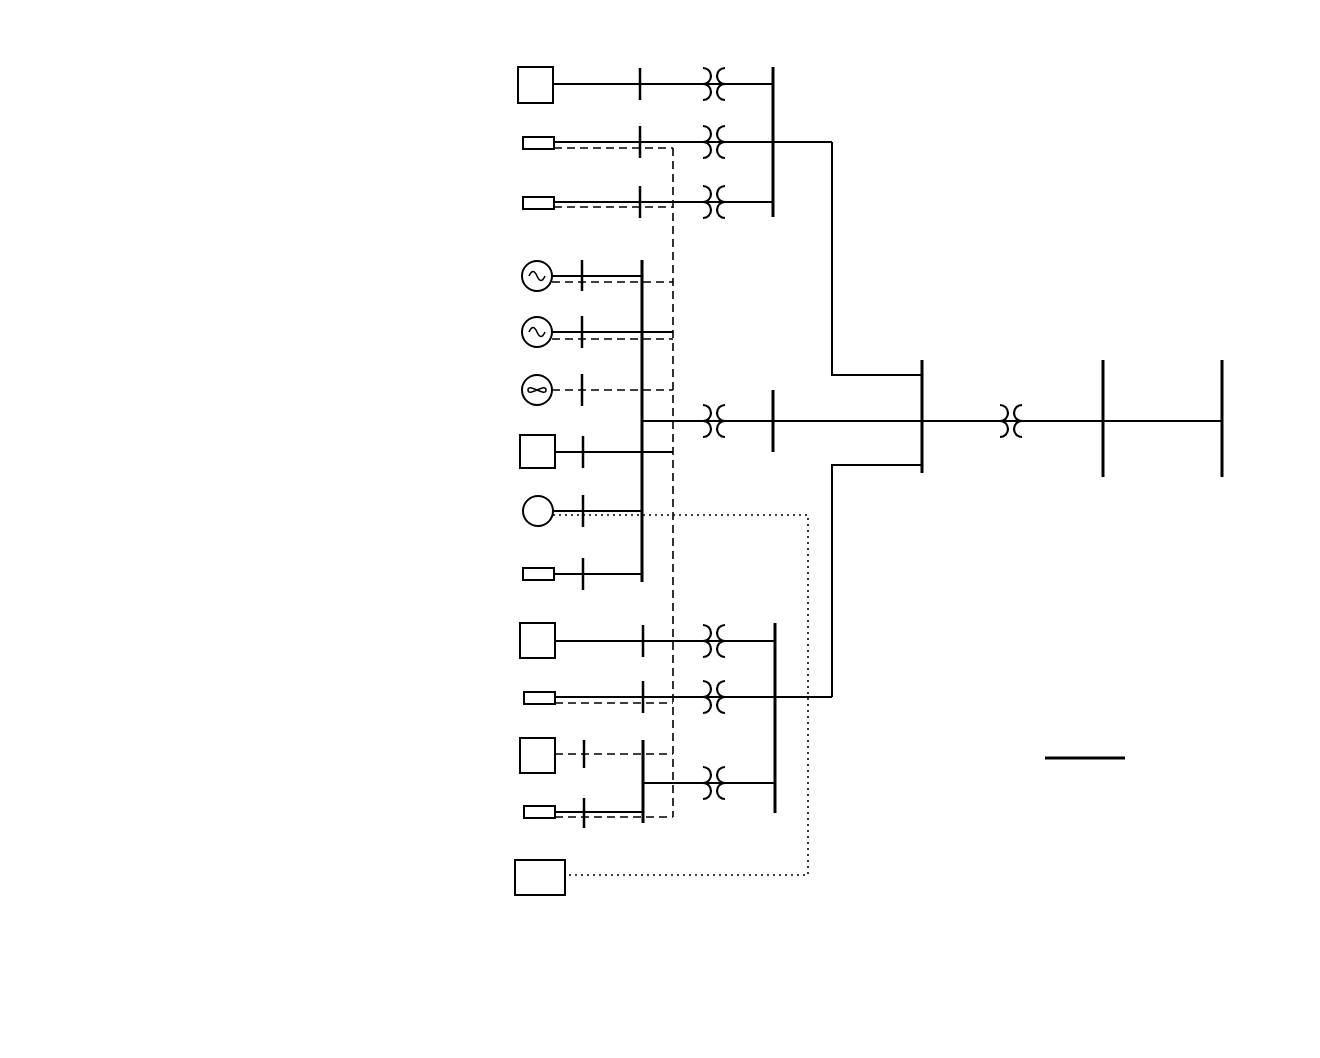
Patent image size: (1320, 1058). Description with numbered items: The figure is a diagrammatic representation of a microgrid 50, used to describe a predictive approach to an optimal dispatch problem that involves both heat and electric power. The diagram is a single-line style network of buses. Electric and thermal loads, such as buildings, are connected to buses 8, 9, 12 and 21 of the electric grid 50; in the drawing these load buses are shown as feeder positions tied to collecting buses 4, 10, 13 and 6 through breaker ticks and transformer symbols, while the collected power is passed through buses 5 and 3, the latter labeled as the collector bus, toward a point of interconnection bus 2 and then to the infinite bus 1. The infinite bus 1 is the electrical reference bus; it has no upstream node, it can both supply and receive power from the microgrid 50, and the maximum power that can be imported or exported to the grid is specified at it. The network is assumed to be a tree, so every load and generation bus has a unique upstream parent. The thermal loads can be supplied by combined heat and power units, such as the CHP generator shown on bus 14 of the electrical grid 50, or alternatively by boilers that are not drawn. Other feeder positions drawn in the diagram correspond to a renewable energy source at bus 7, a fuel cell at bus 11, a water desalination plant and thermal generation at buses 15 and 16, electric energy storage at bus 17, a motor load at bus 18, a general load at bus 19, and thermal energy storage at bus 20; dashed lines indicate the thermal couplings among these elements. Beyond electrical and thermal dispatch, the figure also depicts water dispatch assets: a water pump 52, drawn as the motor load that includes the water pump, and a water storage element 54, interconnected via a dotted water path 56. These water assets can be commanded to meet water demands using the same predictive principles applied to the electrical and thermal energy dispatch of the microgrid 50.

The infinite bus 1 is at (1222, 433).
The point of interconnection (POI) bus 2 is at (1072, 433).
The collector bus 3 is at (922, 434).
The bus 4 is at (773, 156).
The bus 5 is at (782, 435).
The bus 6 is at (775, 730).
The renewable energy source feeder breaker 7 is at (645, 96).
The bus 8 is at (677, 156).
The bus 9 is at (648, 215).
The bus 10 is at (641, 437).
The fuel cell feeder breaker 11 is at (647, 651).
The bus 12 is at (678, 711).
The bus 13 is at (701, 796).
The bus 14 is at (597, 287).
The water desalination plant breaker 15 is at (597, 344).
The thermal generation breaker 16 is at (597, 402).
The electric energy storage breaker 17 is at (596, 465).
The motor load breaker 18 is at (597, 522).
The load breaker 19 is at (582, 586).
The thermal energy storage breaker 20 is at (596, 765).
The bus 21 is at (598, 823).
The microgrid 50 is at (1056, 168).
The water pump 52 is at (526, 501).
The water storage element 54 is at (565, 885).
The water path 56 is at (808, 748).